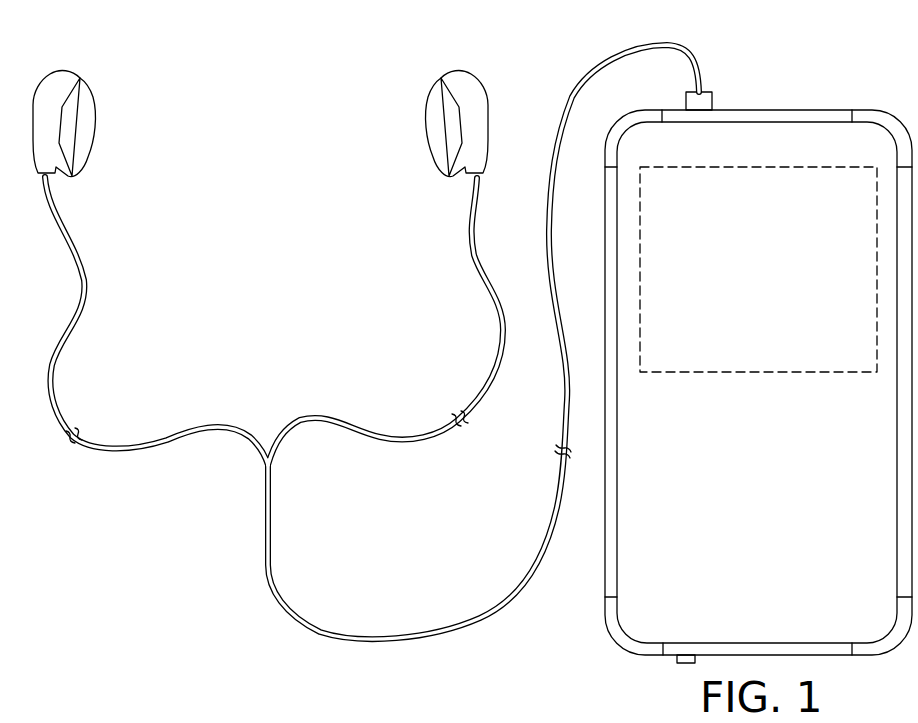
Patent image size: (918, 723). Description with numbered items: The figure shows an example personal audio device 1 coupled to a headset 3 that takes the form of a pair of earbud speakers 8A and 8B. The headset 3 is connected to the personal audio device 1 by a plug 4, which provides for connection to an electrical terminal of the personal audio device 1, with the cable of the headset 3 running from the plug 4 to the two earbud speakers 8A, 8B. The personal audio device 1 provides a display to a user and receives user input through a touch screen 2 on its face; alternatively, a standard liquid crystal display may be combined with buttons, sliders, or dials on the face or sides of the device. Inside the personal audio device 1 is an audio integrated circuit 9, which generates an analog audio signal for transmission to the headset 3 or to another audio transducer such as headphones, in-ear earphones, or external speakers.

The personal audio device 1 is at (835, 110).
The touch screen 2 is at (768, 541).
The headset 3 is at (216, 425).
The plug 4 is at (712, 100).
The earbud speaker 8A is at (452, 72).
The earbud speaker 8B is at (68, 70).
The audio integrated circuit 9 is at (778, 372).